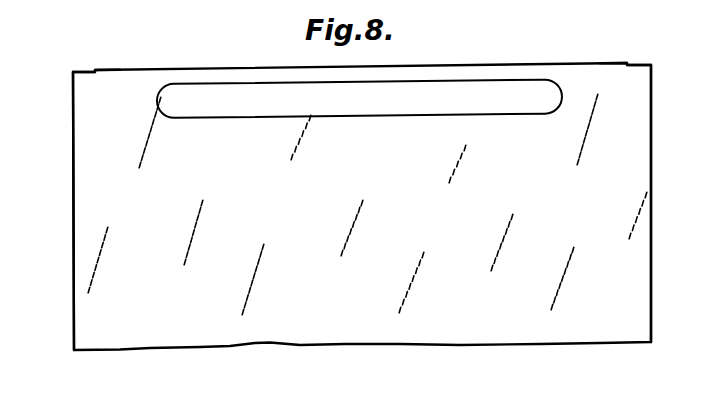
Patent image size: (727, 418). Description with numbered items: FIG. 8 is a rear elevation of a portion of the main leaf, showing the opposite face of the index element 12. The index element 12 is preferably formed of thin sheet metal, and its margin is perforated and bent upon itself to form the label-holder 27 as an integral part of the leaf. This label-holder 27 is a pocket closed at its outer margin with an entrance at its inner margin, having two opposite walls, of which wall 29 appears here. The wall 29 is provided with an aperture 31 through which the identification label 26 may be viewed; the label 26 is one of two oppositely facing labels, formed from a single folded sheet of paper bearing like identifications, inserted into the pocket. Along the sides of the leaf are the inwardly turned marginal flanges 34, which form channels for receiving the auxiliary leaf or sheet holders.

The index element 12 is at (395, 344).
The identification label 26 is at (498, 90).
The label-holder 27 is at (172, 69).
The wall 29 is at (592, 70).
The aperture 31 is at (452, 80).
The marginal flanges 34 is at (665, 216).